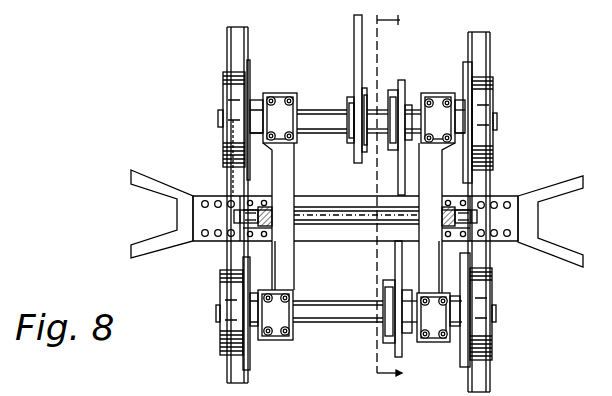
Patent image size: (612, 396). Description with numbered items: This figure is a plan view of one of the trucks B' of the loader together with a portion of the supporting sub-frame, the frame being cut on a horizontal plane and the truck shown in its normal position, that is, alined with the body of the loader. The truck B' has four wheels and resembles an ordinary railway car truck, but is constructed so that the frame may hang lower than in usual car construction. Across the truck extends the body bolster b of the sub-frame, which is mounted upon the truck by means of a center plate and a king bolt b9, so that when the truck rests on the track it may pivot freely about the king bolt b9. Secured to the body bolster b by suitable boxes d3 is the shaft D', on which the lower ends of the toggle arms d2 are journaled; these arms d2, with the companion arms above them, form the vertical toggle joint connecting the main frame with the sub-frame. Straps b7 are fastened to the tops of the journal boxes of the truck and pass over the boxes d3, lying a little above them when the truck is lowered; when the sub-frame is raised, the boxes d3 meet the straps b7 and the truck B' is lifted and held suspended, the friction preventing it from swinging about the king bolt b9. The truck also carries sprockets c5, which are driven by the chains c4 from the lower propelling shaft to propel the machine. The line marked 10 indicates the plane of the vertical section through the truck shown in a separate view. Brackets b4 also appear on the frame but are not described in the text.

The body bolster b is at (363, 197).
The truck B' is at (356, 215).
The bracket arms b4 is at (152, 192).
The strap b7 is at (433, 177).
The king bolt b9 is at (358, 226).
The chain c4 is at (362, 56).
The sprocket c5 is at (364, 90).
The arm d2 is at (262, 232).
The box d3 is at (233, 200).
The shaft D' is at (356, 238).
The section line 10— 10 is at (398, 198).